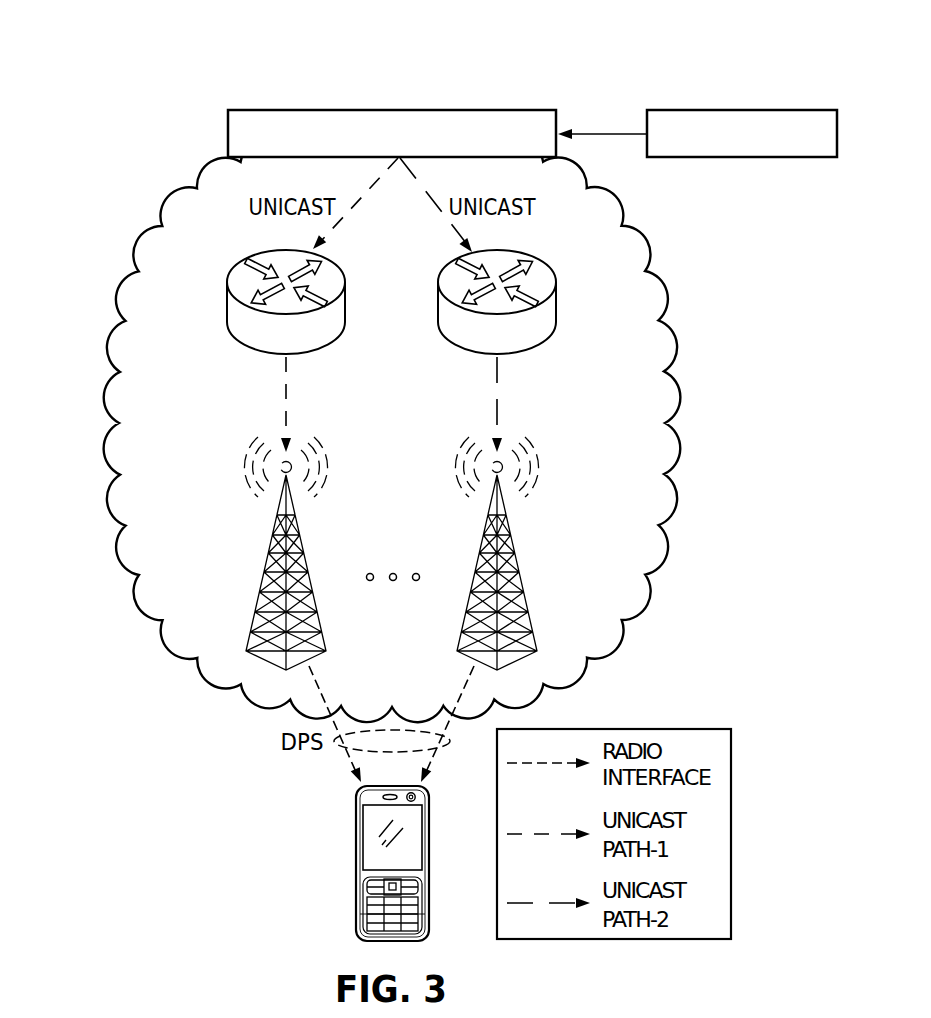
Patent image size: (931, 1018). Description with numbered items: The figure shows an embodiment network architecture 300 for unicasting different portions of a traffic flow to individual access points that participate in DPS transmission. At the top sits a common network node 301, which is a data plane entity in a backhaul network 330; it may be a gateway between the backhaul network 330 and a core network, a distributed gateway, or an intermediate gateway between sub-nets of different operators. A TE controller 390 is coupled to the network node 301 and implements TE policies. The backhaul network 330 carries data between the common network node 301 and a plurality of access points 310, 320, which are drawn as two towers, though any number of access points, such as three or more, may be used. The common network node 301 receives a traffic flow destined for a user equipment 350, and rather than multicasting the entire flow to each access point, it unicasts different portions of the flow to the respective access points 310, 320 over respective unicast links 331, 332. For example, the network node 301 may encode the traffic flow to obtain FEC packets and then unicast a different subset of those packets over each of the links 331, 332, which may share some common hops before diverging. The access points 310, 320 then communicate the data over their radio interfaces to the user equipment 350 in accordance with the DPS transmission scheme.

The network architecture 300 is at (272, 68).
The common network node 301 is at (415, 108).
The access point 310 is at (265, 575).
The access point 320 is at (518, 575).
The backhaul network 330 is at (116, 367).
The unicast link 331 is at (284, 394).
The unicast link 332 is at (500, 416).
The user equipment 350 is at (356, 864).
The TE controller 390 is at (742, 108).